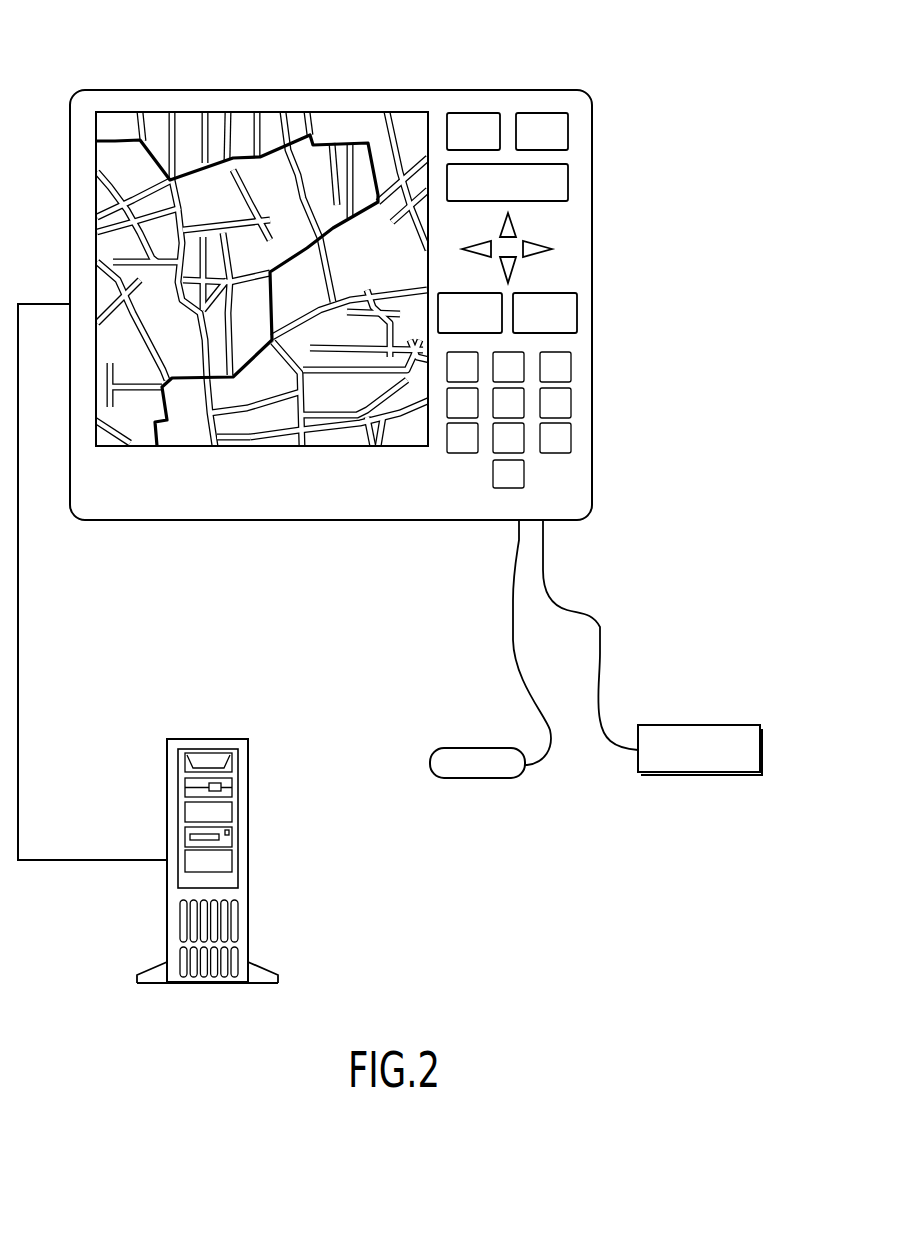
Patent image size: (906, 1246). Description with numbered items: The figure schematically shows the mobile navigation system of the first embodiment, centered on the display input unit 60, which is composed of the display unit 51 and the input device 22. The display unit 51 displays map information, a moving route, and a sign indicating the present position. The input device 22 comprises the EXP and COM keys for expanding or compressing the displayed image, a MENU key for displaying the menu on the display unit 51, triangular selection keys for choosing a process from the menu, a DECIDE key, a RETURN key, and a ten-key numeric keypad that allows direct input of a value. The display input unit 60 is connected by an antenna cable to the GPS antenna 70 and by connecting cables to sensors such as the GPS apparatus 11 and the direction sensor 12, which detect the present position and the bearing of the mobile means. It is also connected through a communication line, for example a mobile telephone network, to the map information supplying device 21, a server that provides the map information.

The display input unit 60 is at (329, 434).
The display unit 51 is at (118, 127).
The input device 22 is at (550, 223).
The map information supplying device 21 is at (237, 740).
The GPS antenna 70 is at (458, 757).
The GPS apparatus 11 is at (652, 647).
The direction sensor 12 is at (705, 726).